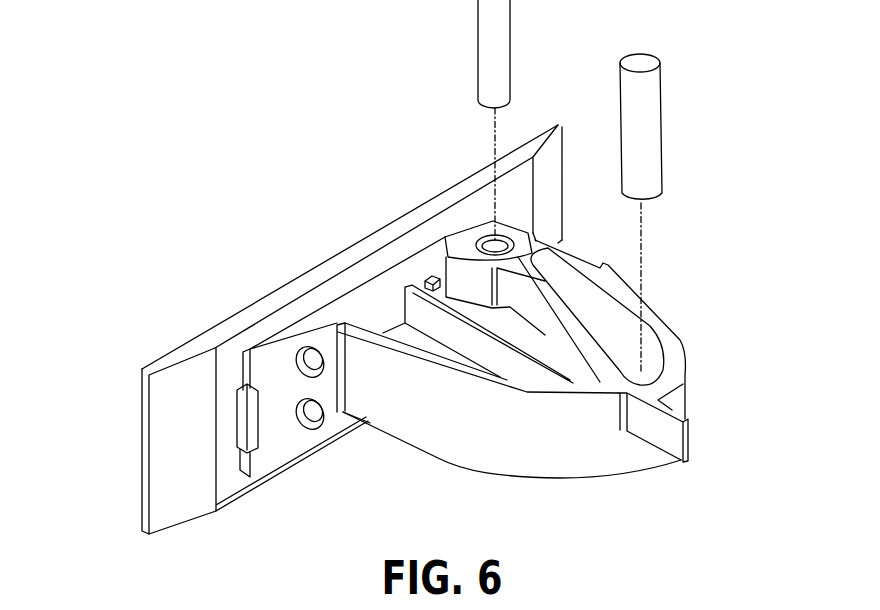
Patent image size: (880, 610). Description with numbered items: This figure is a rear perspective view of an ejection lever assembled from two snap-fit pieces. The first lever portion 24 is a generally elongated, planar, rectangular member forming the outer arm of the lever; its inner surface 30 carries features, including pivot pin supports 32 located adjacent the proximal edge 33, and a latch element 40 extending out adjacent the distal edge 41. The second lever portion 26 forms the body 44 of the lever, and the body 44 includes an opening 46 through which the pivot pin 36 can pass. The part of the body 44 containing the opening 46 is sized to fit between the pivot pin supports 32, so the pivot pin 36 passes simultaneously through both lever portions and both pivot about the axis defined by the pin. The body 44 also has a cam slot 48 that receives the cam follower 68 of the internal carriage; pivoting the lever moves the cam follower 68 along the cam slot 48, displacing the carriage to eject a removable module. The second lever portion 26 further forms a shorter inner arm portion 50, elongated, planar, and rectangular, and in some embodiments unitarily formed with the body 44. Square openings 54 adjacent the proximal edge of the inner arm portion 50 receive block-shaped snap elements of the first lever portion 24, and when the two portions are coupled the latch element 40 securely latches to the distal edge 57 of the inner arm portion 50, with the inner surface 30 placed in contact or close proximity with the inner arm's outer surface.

The first lever portion 24 is at (128, 361).
The second lever portion 26 is at (699, 337).
The inner surface 30 is at (227, 493).
The pivot pin supports 32 is at (478, 232).
The proximal edge 33 is at (574, 149).
The pivot pin 36 is at (489, 60).
The latch element 40 is at (242, 412).
The distal edge 41 is at (130, 493).
The body 44 is at (672, 492).
The opening 46 is at (492, 233).
The cam slot 48 is at (628, 330).
The inner arm portion 50 is at (340, 302).
The square openings 54 is at (278, 451).
The distal edge 57 is at (238, 392).
The cam follower 68 is at (650, 108).